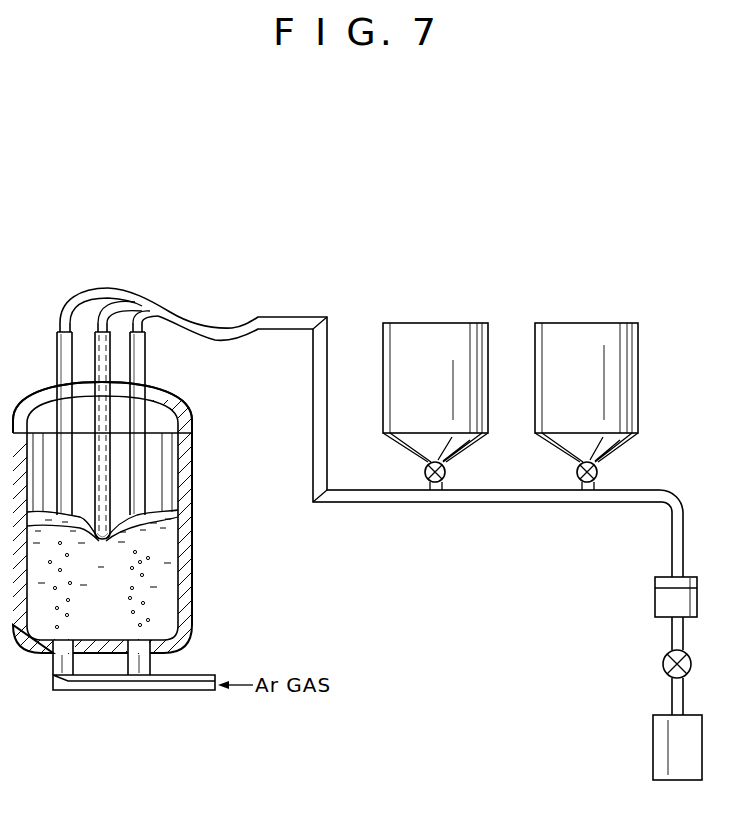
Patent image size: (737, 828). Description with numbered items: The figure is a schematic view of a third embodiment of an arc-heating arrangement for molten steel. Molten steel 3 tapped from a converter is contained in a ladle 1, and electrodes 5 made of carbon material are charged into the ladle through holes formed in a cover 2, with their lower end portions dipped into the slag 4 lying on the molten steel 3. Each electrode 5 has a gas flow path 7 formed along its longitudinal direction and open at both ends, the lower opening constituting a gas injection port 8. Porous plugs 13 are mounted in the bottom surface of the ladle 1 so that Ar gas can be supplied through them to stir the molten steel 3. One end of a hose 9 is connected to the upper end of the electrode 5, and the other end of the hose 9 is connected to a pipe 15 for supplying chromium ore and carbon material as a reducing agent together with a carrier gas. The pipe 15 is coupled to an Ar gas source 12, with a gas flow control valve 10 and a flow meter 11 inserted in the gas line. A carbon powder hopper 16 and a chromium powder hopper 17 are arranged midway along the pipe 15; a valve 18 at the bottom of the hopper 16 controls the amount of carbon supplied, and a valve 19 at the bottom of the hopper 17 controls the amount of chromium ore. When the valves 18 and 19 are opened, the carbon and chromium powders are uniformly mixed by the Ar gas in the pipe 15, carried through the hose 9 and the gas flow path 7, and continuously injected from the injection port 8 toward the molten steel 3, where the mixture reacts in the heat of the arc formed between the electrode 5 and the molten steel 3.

The ladle 1 is at (192, 467).
The cover 2 is at (187, 410).
The molten steel 3 is at (168, 583).
The slag 4 is at (160, 513).
The electrodes 5 is at (88, 369).
The gas flow path 7 is at (108, 353).
The gas injection port 8 is at (100, 541).
The hose 9 is at (204, 325).
The gas flow control valve 10 is at (663, 662).
The flow meter 11 is at (655, 598).
The Ar gas source 12 is at (653, 754).
The porous plugs 13 is at (138, 636).
The pipe 15 is at (378, 503).
The carbon powder hopper 16 is at (437, 323).
The chromium powder hopper 17 is at (589, 323).
The valve 18 is at (446, 471).
The valve 19 is at (598, 471).